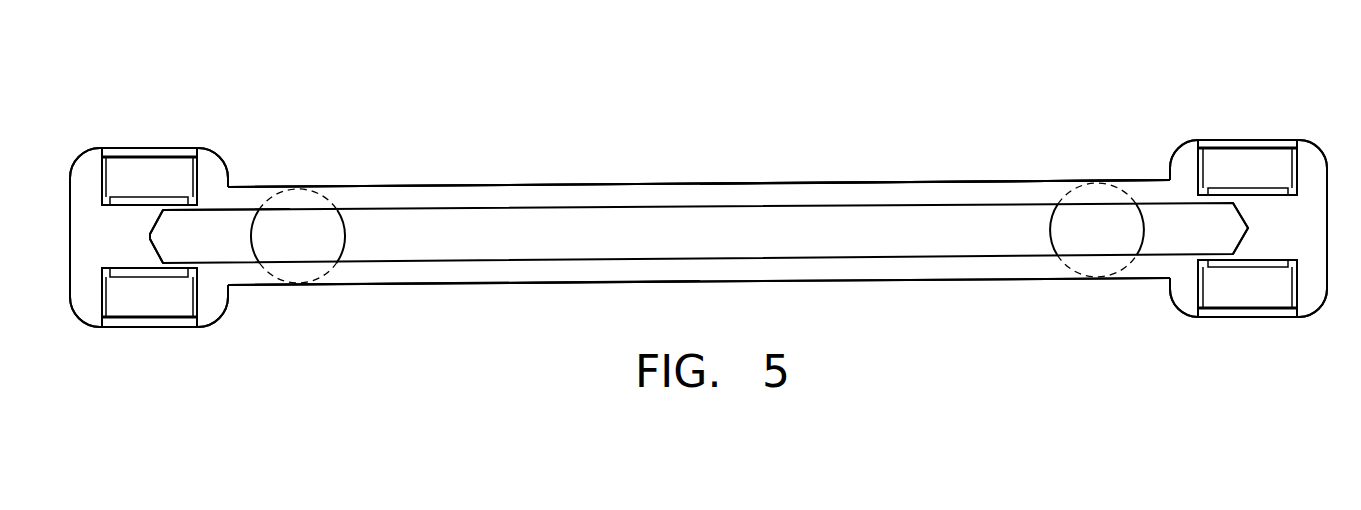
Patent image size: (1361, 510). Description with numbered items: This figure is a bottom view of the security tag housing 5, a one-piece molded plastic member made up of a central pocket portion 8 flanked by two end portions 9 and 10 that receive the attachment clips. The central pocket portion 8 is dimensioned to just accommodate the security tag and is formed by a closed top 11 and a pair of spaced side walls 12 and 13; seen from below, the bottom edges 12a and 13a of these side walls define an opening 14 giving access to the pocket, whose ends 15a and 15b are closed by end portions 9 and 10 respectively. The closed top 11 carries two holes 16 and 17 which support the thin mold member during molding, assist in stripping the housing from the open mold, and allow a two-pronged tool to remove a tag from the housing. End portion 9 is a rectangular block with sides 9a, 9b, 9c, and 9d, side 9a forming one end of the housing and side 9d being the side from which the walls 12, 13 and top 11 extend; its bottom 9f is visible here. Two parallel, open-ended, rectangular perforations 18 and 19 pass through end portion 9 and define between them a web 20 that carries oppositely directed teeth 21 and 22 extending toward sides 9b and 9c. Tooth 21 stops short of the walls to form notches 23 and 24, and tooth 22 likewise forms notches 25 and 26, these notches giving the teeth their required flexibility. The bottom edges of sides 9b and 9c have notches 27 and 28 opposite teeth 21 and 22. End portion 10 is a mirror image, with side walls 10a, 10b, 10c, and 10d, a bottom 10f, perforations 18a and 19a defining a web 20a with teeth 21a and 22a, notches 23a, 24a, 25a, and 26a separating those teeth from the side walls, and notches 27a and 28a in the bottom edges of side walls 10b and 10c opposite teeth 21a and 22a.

The security tag housing 5 is at (350, 186).
The central pocket portion 8 is at (448, 184).
The end portion 9 is at (1332, 203).
The side 9a is at (1330, 245).
The side 9b is at (1265, 140).
The side 9c is at (1250, 318).
The side 9d is at (1168, 176).
The bottom 9f is at (1284, 241).
The end portion 10 is at (68, 222).
The side wall 10a is at (68, 258).
The side wall 10b is at (187, 148).
The side wall 10c is at (174, 328).
The side wall 10d is at (230, 180).
The bottom 10f is at (133, 249).
The closed top 11 is at (676, 244).
The side wall 12 is at (533, 184).
The bottom edge 12a is at (775, 195).
The side wall 13 is at (785, 282).
The bottom edge 13a is at (512, 270).
The opening 14 is at (250, 212).
The end of pocket 15a is at (1246, 225).
The end of pocket 15b is at (151, 236).
The hole 16 is at (1055, 223).
The hole 17 is at (343, 232).
The perforation 18 is at (1232, 150).
The perforation 18a is at (148, 160).
The perforation 19 is at (1272, 300).
The perforation 19a is at (126, 317).
The web 20 is at (1302, 222).
The web 20a is at (104, 217).
The tooth 21 is at (1275, 188).
The tooth 21a is at (122, 198).
The tooth 22 is at (1228, 267).
The tooth 22a is at (157, 278).
The notch 23 is at (1291, 152).
The notch 23a is at (193, 200).
The notch 24 is at (1205, 167).
The notch 24a is at (107, 198).
The notch 25 is at (1297, 300).
The notch 25a is at (196, 280).
The notch 26 is at (1203, 270).
The notch 26a is at (110, 278).
The notch 27 is at (1240, 139).
The notch 27a is at (190, 153).
The notch 28 is at (1207, 318).
The notch 28a is at (192, 320).